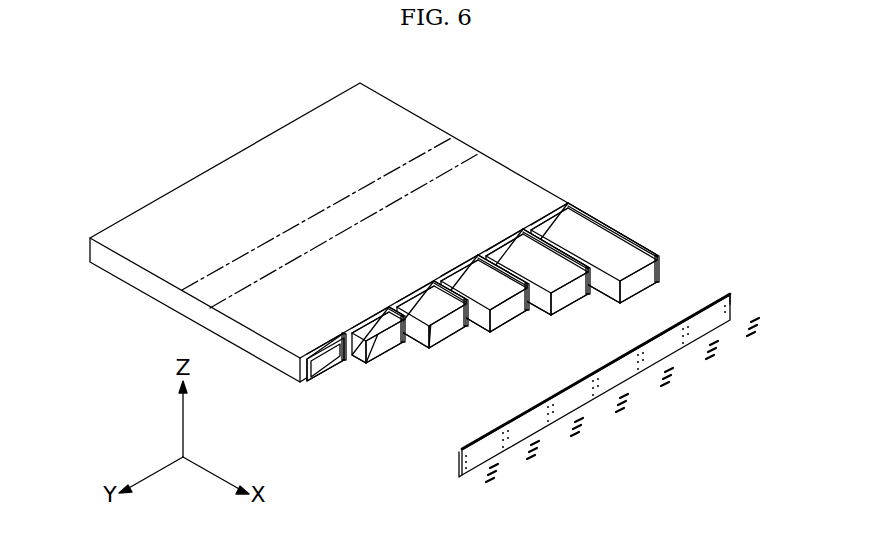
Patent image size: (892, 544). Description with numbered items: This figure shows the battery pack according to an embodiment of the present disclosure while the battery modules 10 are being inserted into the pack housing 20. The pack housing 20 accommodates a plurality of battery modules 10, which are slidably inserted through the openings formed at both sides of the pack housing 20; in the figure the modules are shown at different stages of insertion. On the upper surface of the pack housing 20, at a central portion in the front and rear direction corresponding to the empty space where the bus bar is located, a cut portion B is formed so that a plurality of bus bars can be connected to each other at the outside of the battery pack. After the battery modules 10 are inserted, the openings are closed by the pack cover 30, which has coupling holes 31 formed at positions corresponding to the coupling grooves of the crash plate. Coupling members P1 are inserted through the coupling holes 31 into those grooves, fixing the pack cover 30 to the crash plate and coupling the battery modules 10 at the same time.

The battery module 10 is at (598, 242).
The pack housing 20 is at (393, 117).
The cut portion B is at (452, 152).
The pack cover 30 is at (717, 303).
The coupling hole 31 is at (733, 295).
The coupling member P1 is at (756, 320).